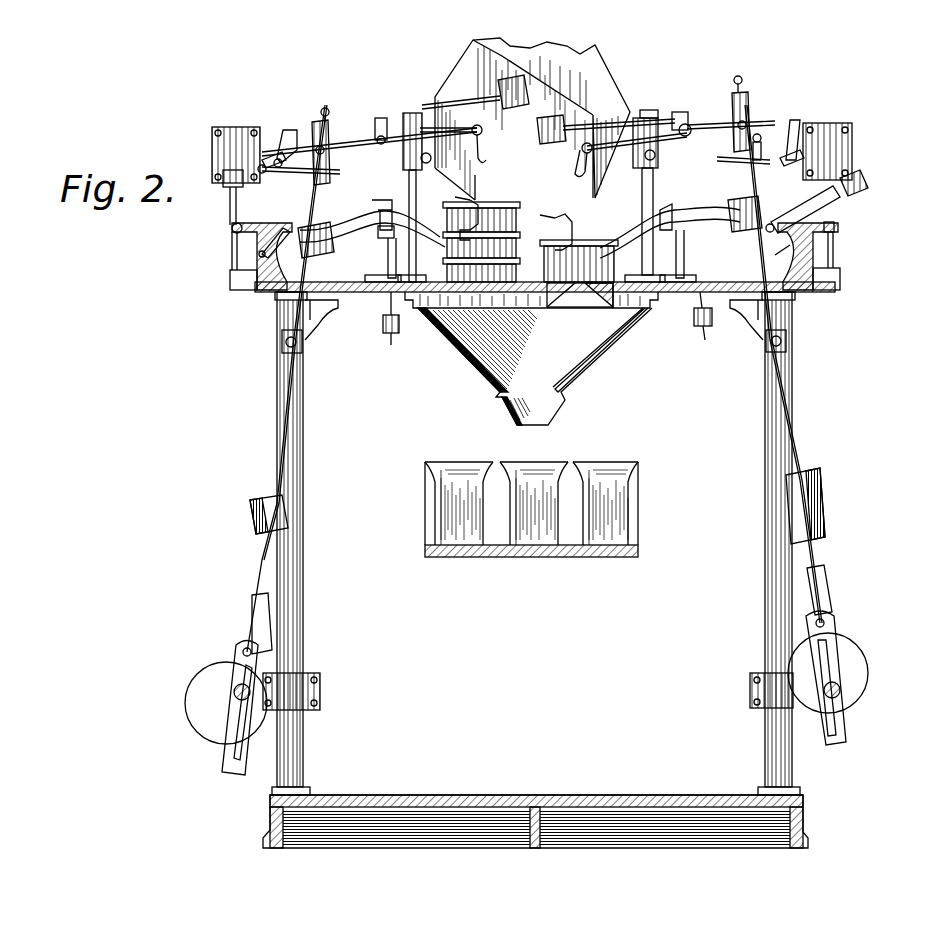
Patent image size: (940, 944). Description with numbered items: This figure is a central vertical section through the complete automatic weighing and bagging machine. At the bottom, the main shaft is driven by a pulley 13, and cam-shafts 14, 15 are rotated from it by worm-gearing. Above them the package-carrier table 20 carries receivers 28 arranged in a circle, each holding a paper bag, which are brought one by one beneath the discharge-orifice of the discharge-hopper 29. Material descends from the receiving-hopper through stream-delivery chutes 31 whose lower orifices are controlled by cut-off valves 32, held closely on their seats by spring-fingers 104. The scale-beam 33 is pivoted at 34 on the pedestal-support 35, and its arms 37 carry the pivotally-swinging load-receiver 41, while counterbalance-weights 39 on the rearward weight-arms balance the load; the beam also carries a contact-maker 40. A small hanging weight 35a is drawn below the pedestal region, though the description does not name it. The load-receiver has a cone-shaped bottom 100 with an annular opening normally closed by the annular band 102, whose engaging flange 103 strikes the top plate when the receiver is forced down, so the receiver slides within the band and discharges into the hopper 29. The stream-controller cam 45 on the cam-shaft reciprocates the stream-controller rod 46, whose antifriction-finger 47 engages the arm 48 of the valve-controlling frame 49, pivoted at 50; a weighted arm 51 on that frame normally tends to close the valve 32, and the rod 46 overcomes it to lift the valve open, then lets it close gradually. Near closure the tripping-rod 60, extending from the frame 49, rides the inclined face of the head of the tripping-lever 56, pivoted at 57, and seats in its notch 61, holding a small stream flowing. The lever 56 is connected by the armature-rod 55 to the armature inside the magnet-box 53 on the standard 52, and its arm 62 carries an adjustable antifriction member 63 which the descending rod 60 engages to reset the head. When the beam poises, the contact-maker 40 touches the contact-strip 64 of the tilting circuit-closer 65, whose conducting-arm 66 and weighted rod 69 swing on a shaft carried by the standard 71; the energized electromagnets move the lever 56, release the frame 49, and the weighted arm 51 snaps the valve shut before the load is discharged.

The pulley 13 is at (836, 228).
The cam-shaft 14 is at (842, 690).
The cam-shaft 15 is at (234, 690).
The package-carrier table 20 is at (500, 558).
The receivers 28 is at (476, 470).
The discharge-hopper 29 is at (598, 348).
The stream-delivery chutes 31 is at (458, 88).
The cut-off valves 32 is at (470, 200).
The scale-beam 33 is at (378, 238).
The pivot 34 is at (539, 232).
The pedestal-support 35 is at (378, 295).
The weight 35a is at (385, 332).
The arms 37 is at (345, 224).
The counterbalance-weights 39 is at (330, 250).
The contact-maker 40 is at (272, 302).
The load-receiver 41 is at (478, 210).
The stream-controller cam 45 is at (205, 712).
The stream-controller rod 46 is at (285, 436).
The antifriction-finger 47 is at (330, 145).
The arm 48 is at (718, 123).
The valve-controlling frame 49 is at (412, 145).
The pivot 50 is at (383, 118).
The weighted arm 51 is at (484, 100).
The standard 52 is at (234, 250).
The magnet-box 53 is at (220, 165).
The armature-rod 55 is at (800, 140).
The tripping-lever 56 is at (288, 140).
The pivot 57 is at (264, 162).
The tripping-rod 60 is at (326, 116).
The notch 61 is at (792, 222).
The arm 62 is at (290, 172).
The antifriction member 63 is at (756, 160).
The contact-strip 64 is at (273, 240).
The circuit-closer 65 is at (785, 221).
The conducting-arm 66 is at (270, 242).
The weighted rod 69 is at (232, 205).
The standard 71 is at (250, 284).
The cone-shaped bottom 100 is at (580, 308).
The annular band 102 is at (455, 238).
The engaging flange 103 is at (447, 266).
The spring-fingers 104 is at (578, 170).